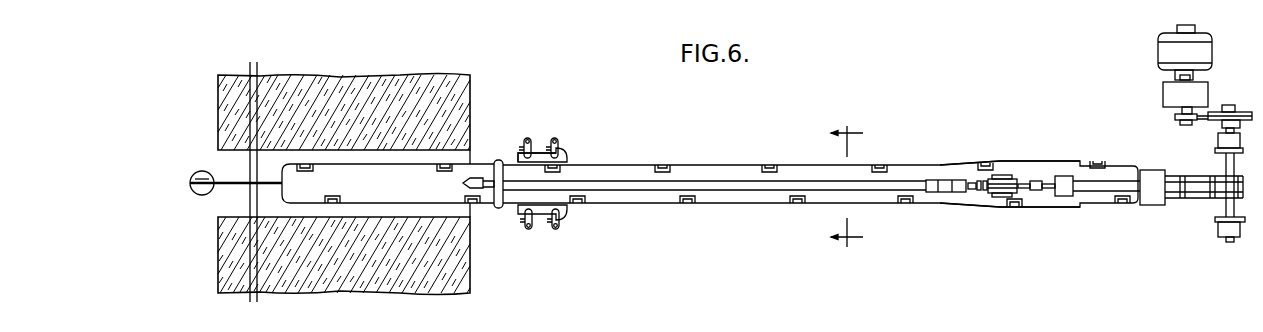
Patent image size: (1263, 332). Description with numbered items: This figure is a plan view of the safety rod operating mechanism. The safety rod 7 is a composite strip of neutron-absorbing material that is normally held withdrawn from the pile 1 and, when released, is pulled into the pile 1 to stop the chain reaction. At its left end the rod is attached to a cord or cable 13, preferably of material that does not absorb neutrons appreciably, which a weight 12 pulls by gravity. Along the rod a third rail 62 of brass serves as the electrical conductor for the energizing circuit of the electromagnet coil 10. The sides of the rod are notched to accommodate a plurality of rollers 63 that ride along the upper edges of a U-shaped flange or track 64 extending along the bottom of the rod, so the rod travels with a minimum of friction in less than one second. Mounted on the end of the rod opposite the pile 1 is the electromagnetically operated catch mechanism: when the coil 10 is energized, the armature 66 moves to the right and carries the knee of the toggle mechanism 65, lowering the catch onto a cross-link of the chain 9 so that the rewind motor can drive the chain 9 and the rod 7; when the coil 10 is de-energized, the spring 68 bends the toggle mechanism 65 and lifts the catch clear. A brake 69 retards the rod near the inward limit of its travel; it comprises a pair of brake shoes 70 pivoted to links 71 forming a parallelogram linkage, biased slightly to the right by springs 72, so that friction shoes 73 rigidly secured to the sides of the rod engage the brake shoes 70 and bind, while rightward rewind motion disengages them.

The pile 1 is at (462, 276).
The safety rod 7 is at (734, 167).
The chain 9 is at (847, 187).
The electromagnet coil 10 is at (1065, 193).
The weight 12 is at (196, 194).
The cord or cable 13 is at (232, 191).
The third rail 62 is at (606, 181).
The rollers 63 is at (684, 204).
The U-shaped flange or track 64 is at (1157, 205).
The toggle mechanism 65 is at (1003, 194).
The armature 66 is at (1025, 184).
The spring 68 is at (978, 190).
The brake 69 is at (551, 118).
The brake shoes 70 is at (567, 153).
The links 71 is at (525, 138).
The springs 72 is at (521, 148).
The friction shoes 73 is at (1005, 162).